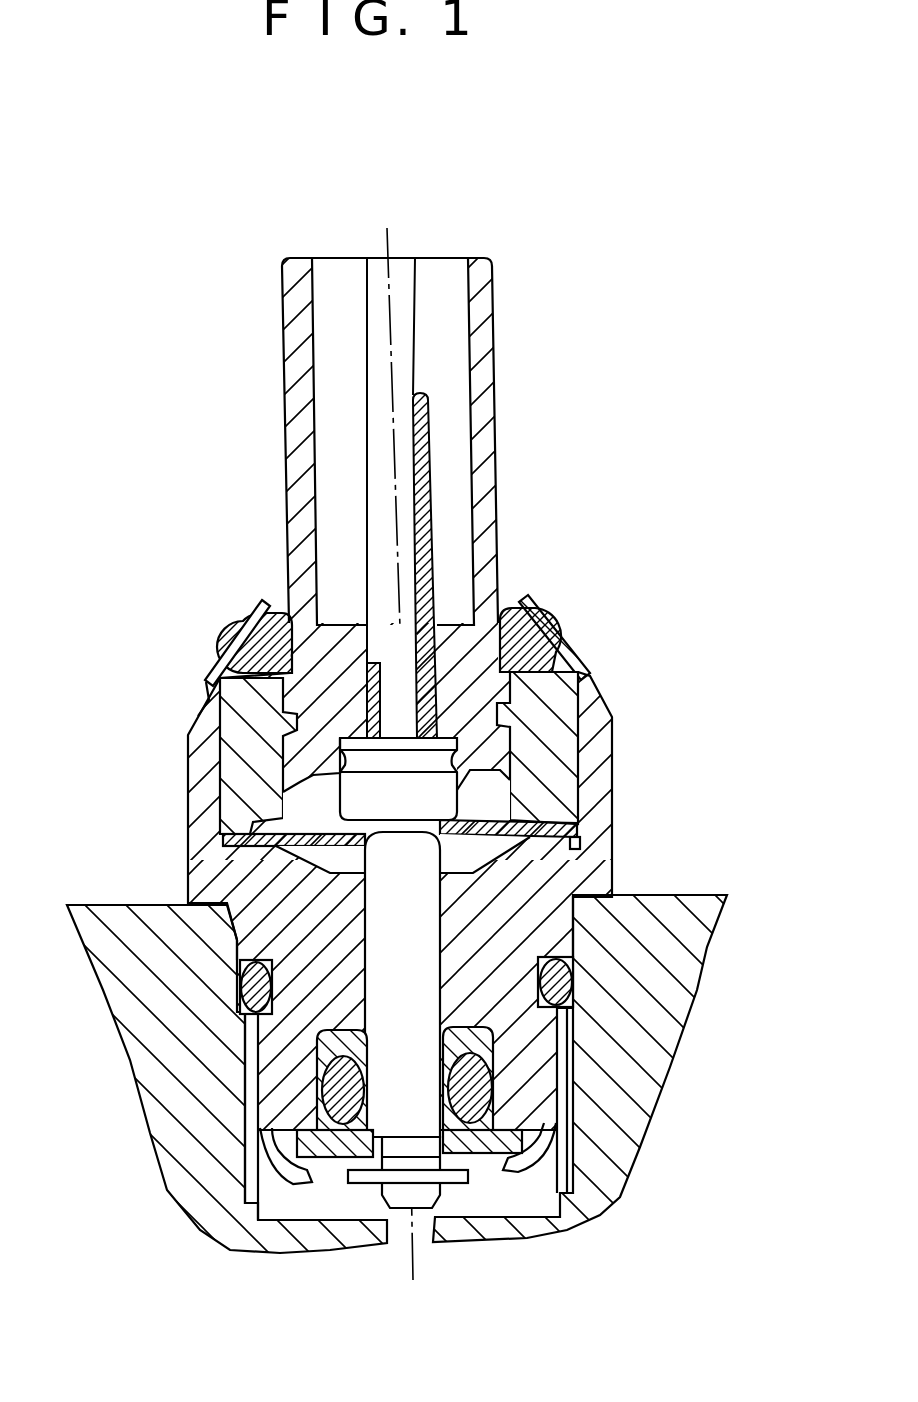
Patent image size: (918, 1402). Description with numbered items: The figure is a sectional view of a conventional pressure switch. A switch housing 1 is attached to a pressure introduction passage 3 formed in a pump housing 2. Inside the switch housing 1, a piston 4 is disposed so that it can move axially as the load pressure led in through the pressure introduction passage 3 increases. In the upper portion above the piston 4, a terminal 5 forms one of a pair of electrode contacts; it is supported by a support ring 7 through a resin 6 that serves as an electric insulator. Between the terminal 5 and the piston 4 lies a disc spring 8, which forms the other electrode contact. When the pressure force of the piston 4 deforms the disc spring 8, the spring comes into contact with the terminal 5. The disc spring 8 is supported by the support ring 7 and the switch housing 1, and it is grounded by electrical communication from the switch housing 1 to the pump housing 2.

The switch housing 1 is at (210, 873).
The pump housing 2 is at (160, 1105).
The pressure introduction passage 3 is at (420, 1235).
The piston 4 is at (427, 937).
The terminal 5 is at (443, 803).
The resin 6 is at (307, 755).
The support ring 7 is at (567, 742).
The disc spring 8 is at (537, 857).